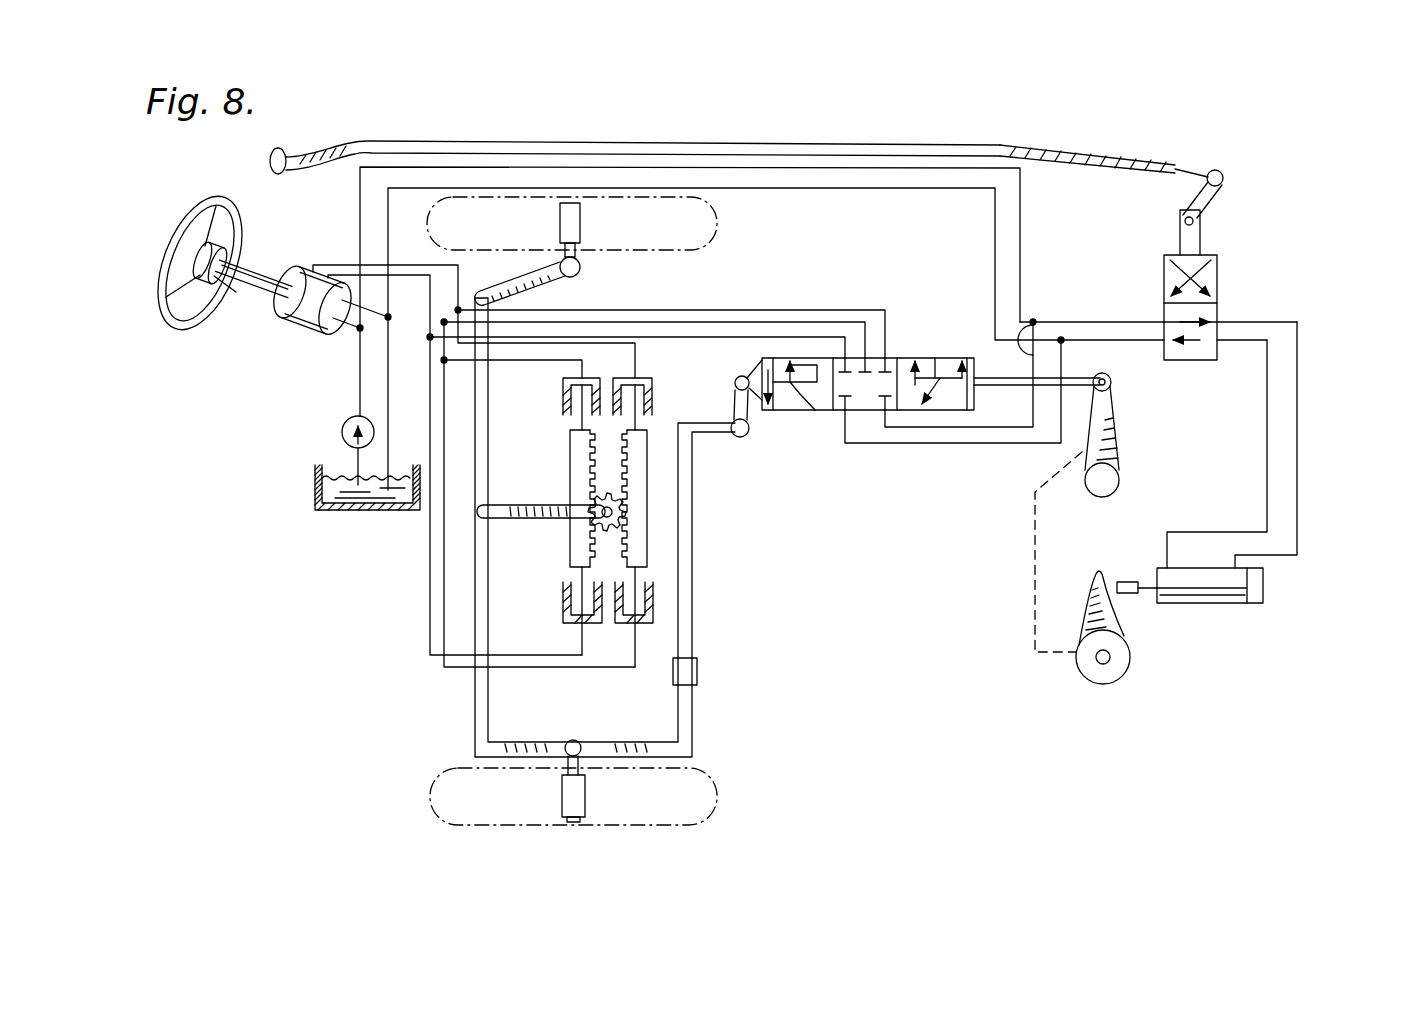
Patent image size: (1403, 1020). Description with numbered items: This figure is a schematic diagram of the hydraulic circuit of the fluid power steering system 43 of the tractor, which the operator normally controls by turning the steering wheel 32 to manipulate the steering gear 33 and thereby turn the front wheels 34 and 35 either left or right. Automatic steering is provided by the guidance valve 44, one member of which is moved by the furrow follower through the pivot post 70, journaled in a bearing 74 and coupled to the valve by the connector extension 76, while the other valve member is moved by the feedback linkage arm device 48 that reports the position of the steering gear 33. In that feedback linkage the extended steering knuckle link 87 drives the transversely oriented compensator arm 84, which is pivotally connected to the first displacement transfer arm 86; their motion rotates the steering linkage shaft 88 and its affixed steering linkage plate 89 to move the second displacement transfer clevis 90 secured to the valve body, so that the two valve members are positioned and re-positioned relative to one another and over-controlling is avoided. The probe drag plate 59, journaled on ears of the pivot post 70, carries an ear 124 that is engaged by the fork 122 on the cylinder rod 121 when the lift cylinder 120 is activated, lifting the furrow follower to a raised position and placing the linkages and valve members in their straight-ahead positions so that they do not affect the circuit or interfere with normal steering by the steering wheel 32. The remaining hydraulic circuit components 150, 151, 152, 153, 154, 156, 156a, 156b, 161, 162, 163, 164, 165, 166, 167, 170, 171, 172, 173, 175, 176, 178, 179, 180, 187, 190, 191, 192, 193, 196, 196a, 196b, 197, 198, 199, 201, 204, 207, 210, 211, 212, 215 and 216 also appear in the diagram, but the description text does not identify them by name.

The steering wheel 32 is at (208, 207).
The steering gear 33 is at (455, 730).
The tractor front wheel 34 is at (640, 830).
The tractor front wheel 35 is at (725, 230).
The fluid power steering system hydraulic circuit 43 is at (420, 575).
The guidance valve 44 is at (903, 352).
The feedback linkage arm device 48 is at (697, 624).
The probe drag plate 59 is at (1095, 687).
The pivot post 70 is at (1115, 480).
The bearing 74 is at (1115, 402).
The connector extension 76 is at (1080, 384).
The compensator arm 84 is at (694, 567).
The first displacement transfer arm 86 is at (733, 400).
The extended steering knuckle link 87 is at (655, 720).
The steering linkage shaft 88 is at (738, 438).
The steering linkage plate 89 is at (738, 376).
The second displacement transfer clevis 90 is at (752, 397).
The lift cylinder 120 is at (1235, 605).
The cylinder rod 121 is at (1145, 585).
The fork 122 is at (1122, 580).
The ear 124 is at (1093, 585).
The reservoir 150 is at (320, 517).
The pump 151 is at (342, 434).
The pump line 152 is at (358, 377).
The steering valve 153 is at (318, 320).
The return line 154 is at (332, 330).
The pressure line 156 is at (360, 178).
The branch line 156a is at (1030, 323).
The branch line 156b is at (1078, 325).
The steering line 161 is at (360, 232).
The steering line 162 is at (340, 264).
The steering actuator 163 is at (432, 264).
The line 164 is at (430, 642).
The line 165 is at (442, 670).
The cylinder 166 is at (554, 357).
The cylinder 167 is at (565, 379).
The cylinder 170 is at (566, 605).
The cylinder 171 is at (650, 605).
The piston rod 172 is at (544, 414).
The piston rod 173 is at (632, 381).
The rack 175 is at (578, 537).
The rack 176 is at (648, 514).
The pinion gear 178 is at (624, 496).
The shaft 179 is at (497, 520).
The arm 180 is at (478, 490).
The cylinder 187 is at (525, 283).
The return line 190 is at (802, 414).
The line 191 is at (737, 322).
The line 192 is at (677, 336).
The line 193 is at (797, 308).
The line 196 is at (696, 188).
The line 196a is at (987, 447).
The line 196b is at (1162, 347).
The line 197 is at (1298, 377).
The line 198 is at (1270, 442).
The line 199 is at (930, 412).
The valve port 201 is at (1218, 330).
The piston 204 is at (1175, 592).
The valve section 207 is at (1218, 285).
The cable 210 is at (572, 141).
The cable sheath 211 is at (1130, 117).
The cable end 212 is at (1196, 168).
The cable ring 215 is at (288, 154).
The valve lever 216 is at (1222, 192).